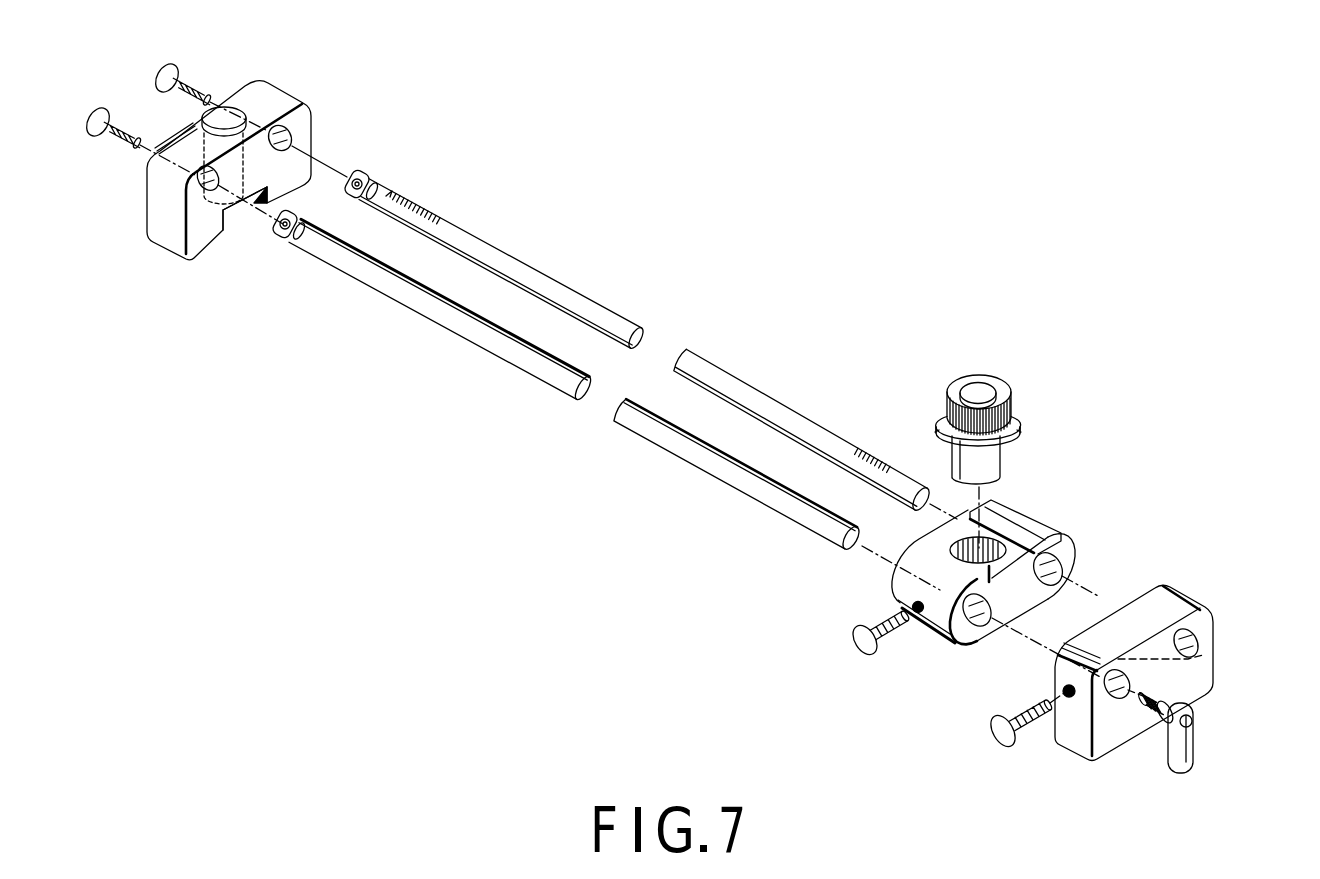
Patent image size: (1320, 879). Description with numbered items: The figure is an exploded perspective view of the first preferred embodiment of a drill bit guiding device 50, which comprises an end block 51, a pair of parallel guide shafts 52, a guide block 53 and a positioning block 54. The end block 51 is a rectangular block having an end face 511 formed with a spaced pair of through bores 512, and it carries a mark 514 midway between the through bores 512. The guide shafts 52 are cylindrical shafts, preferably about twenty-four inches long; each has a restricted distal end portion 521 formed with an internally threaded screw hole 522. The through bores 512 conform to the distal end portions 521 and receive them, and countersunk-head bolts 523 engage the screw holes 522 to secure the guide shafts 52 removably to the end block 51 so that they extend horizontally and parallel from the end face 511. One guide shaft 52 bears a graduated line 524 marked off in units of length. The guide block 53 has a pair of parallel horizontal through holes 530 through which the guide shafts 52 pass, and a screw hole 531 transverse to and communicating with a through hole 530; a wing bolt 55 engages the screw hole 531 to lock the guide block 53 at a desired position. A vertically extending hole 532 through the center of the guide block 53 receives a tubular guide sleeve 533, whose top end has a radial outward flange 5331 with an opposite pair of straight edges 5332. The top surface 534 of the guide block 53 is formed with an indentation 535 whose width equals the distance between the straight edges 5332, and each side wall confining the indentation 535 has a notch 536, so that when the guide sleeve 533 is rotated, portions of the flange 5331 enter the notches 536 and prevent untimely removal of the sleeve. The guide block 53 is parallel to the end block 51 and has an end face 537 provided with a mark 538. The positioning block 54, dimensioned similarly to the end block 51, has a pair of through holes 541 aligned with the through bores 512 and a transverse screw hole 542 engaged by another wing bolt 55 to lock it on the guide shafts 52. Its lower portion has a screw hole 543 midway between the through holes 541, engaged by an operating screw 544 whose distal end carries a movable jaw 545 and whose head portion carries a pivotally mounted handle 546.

The drill bit guiding device 50 is at (623, 381).
The end block 51 is at (219, 170).
The end face 511 is at (288, 112).
The through bores 512 is at (293, 132).
The mark 514 is at (240, 205).
The guide shafts 52 is at (640, 322).
The restricted distal end portion 521 is at (359, 172).
The screw hole 522 is at (378, 175).
The countersunk-head bolts 523 is at (153, 77).
The graduated line 524 is at (441, 213).
The guide blocks 53 is at (1018, 580).
The through holes 530 is at (1085, 583).
The screw hole 531 is at (907, 604).
The vertically extending hole 532 is at (993, 547).
The tubular guide sleeve 533 is at (990, 437).
The radial outward flange 5331 is at (1020, 436).
The straight edges 5332 is at (938, 430).
The top surface 534 is at (1020, 521).
The indentation 535 is at (1093, 578).
The notch 536 is at (1062, 560).
The end face 537 is at (960, 632).
The mark 538 is at (1090, 592).
The positioning block 54 is at (1163, 682).
The through holes 541 is at (1199, 636).
The screw hole 542 is at (1069, 698).
The screw hole 543 is at (1151, 714).
The operating screw 544 is at (1180, 722).
The movable jaw 545 is at (1132, 680).
The handle 546 is at (1181, 757).
The wing bolts 55 is at (860, 655).